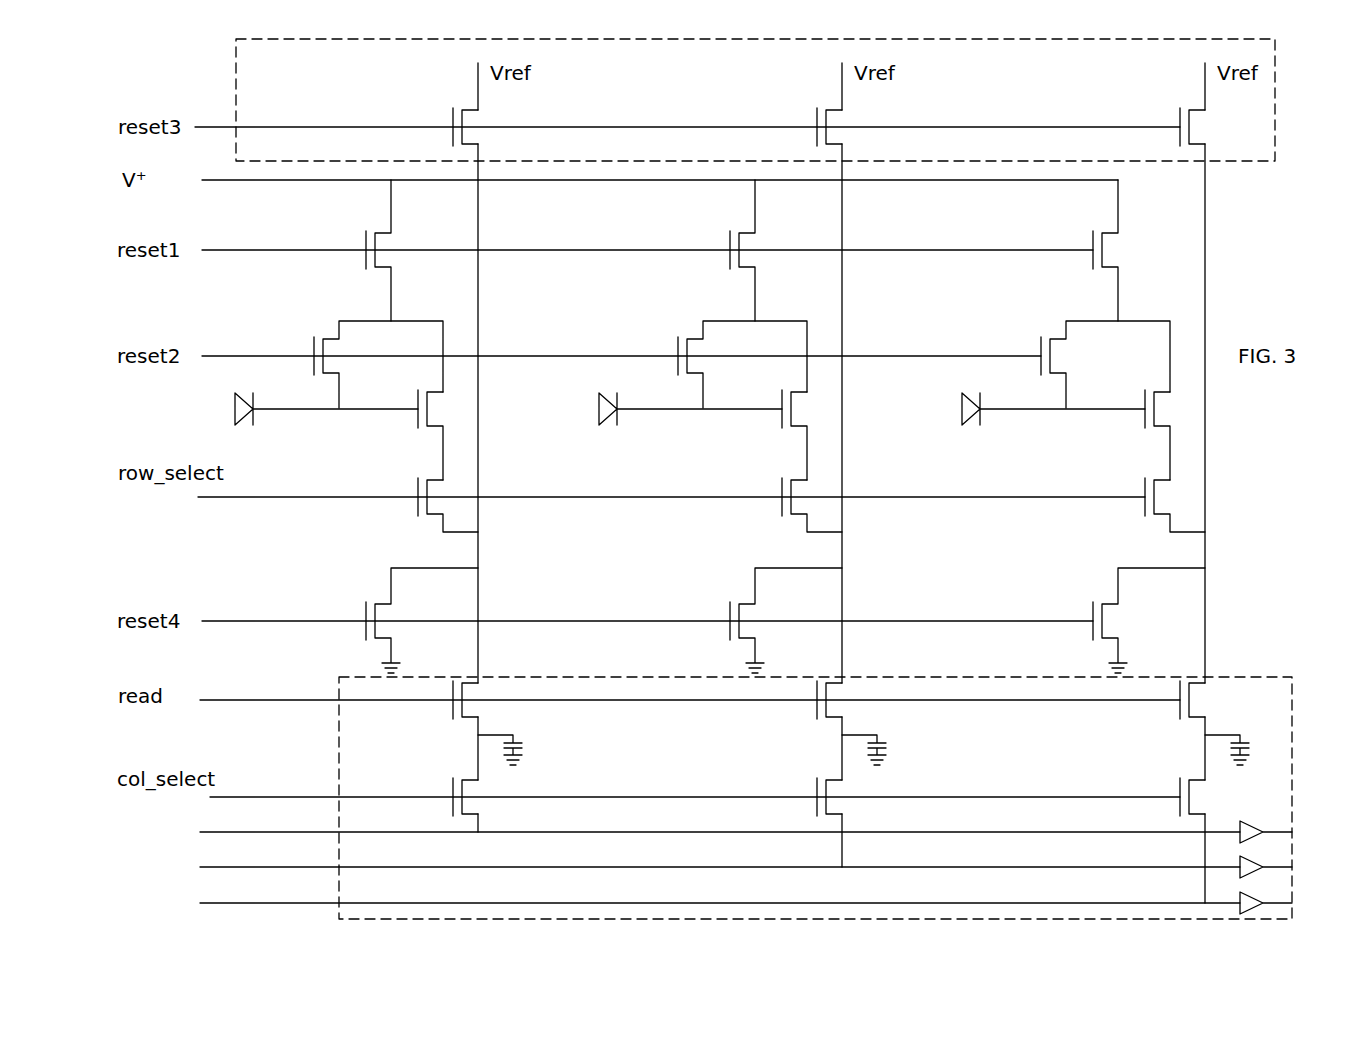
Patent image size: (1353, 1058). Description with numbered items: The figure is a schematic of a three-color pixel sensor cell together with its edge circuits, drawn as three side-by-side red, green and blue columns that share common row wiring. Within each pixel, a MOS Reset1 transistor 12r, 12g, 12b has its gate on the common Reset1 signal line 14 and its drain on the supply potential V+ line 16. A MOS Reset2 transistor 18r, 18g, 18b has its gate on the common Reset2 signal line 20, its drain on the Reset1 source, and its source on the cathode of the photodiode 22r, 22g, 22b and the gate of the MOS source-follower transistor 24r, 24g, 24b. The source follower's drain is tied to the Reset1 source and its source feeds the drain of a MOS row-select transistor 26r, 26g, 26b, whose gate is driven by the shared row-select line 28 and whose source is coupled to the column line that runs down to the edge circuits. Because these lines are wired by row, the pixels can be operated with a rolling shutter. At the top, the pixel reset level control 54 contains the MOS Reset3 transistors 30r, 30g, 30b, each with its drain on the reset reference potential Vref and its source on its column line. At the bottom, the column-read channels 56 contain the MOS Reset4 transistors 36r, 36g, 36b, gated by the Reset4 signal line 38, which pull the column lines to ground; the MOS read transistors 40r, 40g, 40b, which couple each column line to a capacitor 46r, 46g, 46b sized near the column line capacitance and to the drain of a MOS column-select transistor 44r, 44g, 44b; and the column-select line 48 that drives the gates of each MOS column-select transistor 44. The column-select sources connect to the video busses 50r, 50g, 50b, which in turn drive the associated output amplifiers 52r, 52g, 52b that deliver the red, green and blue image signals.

The pixel reset level control 54 is at (228, 92).
The column-read channels 56 is at (1213, 672).
The supply potential V+ line 16 is at (240, 168).
The Reset1 signal line 14 is at (240, 243).
The Reset2 signal line 20 is at (240, 350).
The row-select line 28 is at (240, 490).
The Reset4 signal line 38 is at (240, 615).
The MOS column-select transistor 44 is at (240, 693).
The column-select line 48 is at (240, 792).
The MOS Reset3 transistor 30r is at (470, 87).
The MOS Reset3 transistor 30g is at (781, 103).
The MOS Reset3 transistor 30b is at (1149, 103).
The MOS Reset1 transistor 12r is at (400, 238).
The MOS Reset1 transistor 12g is at (774, 250).
The MOS Reset1 transistor 12b is at (1137, 250).
The MOS Reset2 transistor 18r is at (338, 363).
The MOS Reset2 transistor 18g is at (742, 364).
The MOS Reset2 transistor 18b is at (1105, 364).
The photodiode 22r is at (230, 400).
The photodiode 22g is at (641, 398).
The photodiode 22b is at (1004, 398).
The MOS source-follower transistor 24r is at (413, 422).
The MOS source-follower transistor 24g is at (748, 435).
The MOS source-follower transistor 24b is at (1111, 435).
The MOS row-select transistor 26r is at (430, 519).
The MOS row-select transistor 26g is at (776, 525).
The MOS row-select transistor 26b is at (1139, 525).
The MOS Reset4 transistor 36r is at (362, 648).
The MOS Reset4 transistor 36g is at (738, 622).
The MOS Reset4 transistor 36b is at (1101, 622).
The MOS read transistor 40r is at (448, 713).
The MOS read transistor 40g is at (778, 707).
The MOS read transistor 40b is at (1140, 707).
The MOS column-select transistor 44r is at (448, 781).
The MOS column-select transistor 44g is at (776, 783).
The MOS column-select transistor 44b is at (1136, 783).
The capacitor 46r is at (532, 750).
The capacitor 46g is at (918, 745).
The capacitor 46b is at (1272, 750).
The video bus 50r is at (740, 826).
The video bus 50g is at (775, 861).
The video bus 50b is at (810, 897).
The amplifier 52r is at (1255, 818).
The amplifier 52g is at (1255, 853).
The amplifier 52b is at (1255, 890).